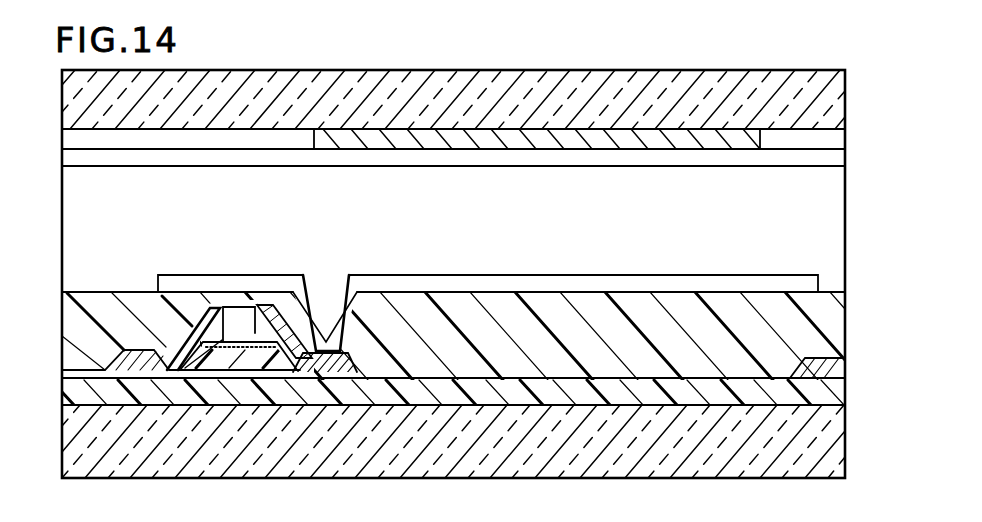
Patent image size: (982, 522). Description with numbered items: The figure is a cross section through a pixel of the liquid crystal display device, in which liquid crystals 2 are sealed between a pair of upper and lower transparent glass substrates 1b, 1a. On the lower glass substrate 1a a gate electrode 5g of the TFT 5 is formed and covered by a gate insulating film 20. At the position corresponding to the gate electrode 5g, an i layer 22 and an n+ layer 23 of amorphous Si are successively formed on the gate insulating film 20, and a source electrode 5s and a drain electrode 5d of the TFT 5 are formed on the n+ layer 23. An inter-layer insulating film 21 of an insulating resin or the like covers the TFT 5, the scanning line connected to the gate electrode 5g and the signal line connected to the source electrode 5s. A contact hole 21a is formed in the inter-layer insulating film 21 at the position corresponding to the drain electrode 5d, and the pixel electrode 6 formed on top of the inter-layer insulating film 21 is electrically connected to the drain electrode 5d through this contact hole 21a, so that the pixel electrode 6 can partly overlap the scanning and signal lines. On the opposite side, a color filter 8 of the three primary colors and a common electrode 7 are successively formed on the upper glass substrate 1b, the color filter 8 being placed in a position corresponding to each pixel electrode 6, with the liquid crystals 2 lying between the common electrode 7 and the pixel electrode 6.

The lower transparent glass substrate 1a is at (829, 453).
The upper transparent glass substrate 1b is at (846, 80).
The liquid crystals 2 is at (827, 200).
The TFT 5 is at (243, 323).
The source electrode 5s is at (832, 372).
The gate electrode 5g is at (225, 403).
The drain electrode 5d is at (330, 372).
The pixel electrode 6 is at (805, 283).
The common electrode 7 is at (826, 160).
The color filter 8 is at (830, 137).
The gate insulating film 20 is at (828, 398).
The inter-layer insulating film 21 is at (818, 327).
The contact hole 21a is at (333, 335).
The i layer 22 is at (178, 316).
The n+ layer 23 is at (258, 335).